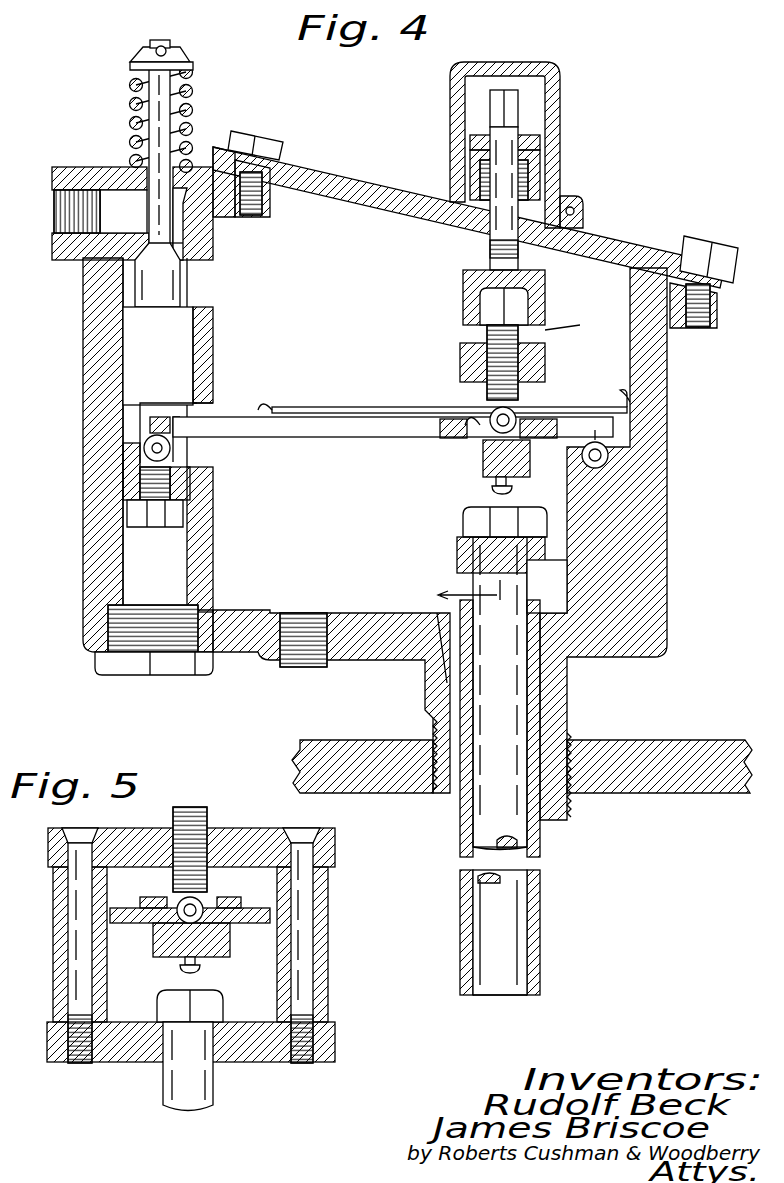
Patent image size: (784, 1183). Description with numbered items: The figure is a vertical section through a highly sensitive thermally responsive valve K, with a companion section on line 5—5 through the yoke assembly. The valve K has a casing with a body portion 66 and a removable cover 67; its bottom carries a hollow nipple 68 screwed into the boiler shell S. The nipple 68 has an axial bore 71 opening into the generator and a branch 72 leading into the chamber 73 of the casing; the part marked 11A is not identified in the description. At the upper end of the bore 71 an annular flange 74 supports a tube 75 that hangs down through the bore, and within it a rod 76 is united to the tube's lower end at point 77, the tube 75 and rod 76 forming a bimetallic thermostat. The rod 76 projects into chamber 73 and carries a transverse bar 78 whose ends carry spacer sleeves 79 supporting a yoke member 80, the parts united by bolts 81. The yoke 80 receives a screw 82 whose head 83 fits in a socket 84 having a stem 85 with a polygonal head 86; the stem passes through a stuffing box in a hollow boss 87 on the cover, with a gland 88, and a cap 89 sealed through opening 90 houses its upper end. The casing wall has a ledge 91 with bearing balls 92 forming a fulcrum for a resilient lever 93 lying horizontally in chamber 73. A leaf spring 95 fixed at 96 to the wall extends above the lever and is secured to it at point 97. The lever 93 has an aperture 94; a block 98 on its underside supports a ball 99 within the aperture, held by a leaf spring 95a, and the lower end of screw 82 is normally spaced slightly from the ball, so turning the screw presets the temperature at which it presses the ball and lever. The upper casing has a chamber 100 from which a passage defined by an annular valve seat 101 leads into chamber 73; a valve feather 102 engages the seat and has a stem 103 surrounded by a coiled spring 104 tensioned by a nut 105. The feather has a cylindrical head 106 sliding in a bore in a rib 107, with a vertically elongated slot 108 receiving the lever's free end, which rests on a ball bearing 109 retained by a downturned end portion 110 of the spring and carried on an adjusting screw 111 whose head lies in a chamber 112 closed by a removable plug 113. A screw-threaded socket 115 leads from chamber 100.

In FIG. 4, the section line 5 is at (500, 582).
In FIG. 4, the threaded connection 11A is at (355, 613).
In FIG. 4, the body portion 66 is at (668, 550).
In FIG. 4, the removable cover 67 is at (600, 243).
In FIG. 4, the hollow boss or nipple 68 is at (432, 702).
In FIG. 4, the axial bore 71 is at (548, 822).
In FIG. 4, the branch 72 is at (437, 665).
In FIG. 4, the chamber 73 is at (327, 647).
In FIG. 4, the annular flange 74 is at (544, 590).
In FIG. 4, the tube 75 is at (462, 838).
In FIG. 4, the rod 76 is at (530, 858).
In FIG. 4, the point of union 77 is at (530, 985).
In FIG. 4, the transverse bar 78 is at (460, 545).
In FIG. 5, the transverse bar 78 is at (52, 1040).
In FIG. 5, the spacer sleeves 79 is at (60, 918).
In FIG. 4, the yoke member 80 is at (470, 357).
In FIG. 5, the yoke member 80 is at (52, 843).
In FIG. 5, the bolts 81 is at (78, 890).
In FIG. 4, the bolt 82 is at (492, 330).
In FIG. 5, the bolt 82 is at (207, 815).
In FIG. 4, the head 83 is at (490, 305).
In FIG. 4, the socket 84 is at (465, 290).
In FIG. 4, the stem 85 is at (492, 243).
In FIG. 4, the polygonal head 86 is at (512, 105).
In FIG. 4, the hollow boss 87 is at (535, 180).
In FIG. 4, the gland 88 is at (540, 140).
In FIG. 4, the cap 89 is at (540, 120).
In FIG. 4, the opening 90 is at (578, 192).
In FIG. 4, the ledge 91 is at (610, 455).
In FIG. 4, the bearing balls 92 is at (595, 440).
In FIG. 4, the lever 93 is at (345, 436).
In FIG. 5, the lever 93 is at (135, 924).
In FIG. 4, the aperture 94 is at (470, 424).
In FIG. 4, the leaf spring 95 is at (546, 418).
In FIG. 5, the leaf spring 95 is at (152, 897).
In FIG. 4, the leaf spring 95a is at (494, 482).
In FIG. 5, the leaf spring 95a is at (202, 968).
In FIG. 4, the fixing point 96 is at (620, 392).
In FIG. 4, the securing point 97 is at (250, 412).
In FIG. 4, the block 98 is at (498, 450).
In FIG. 4, the ball 99 is at (497, 412).
In FIG. 5, the ball 99 is at (197, 900).
In FIG. 4, the chamber 100 is at (251, 480).
In FIG. 4, the annular valve seat 101 is at (182, 248).
In FIG. 4, the valve feather 102 is at (172, 275).
In FIG. 4, the stem 103 is at (157, 97).
In FIG. 4, the coiled spring 104 is at (131, 84).
In FIG. 4, the nut 105 is at (147, 50).
In FIG. 4, the cylindrical head 106 is at (190, 302).
In FIG. 4, the rib 107 is at (200, 330).
In FIG. 4, the vertically elongated slot 108 is at (155, 408).
In FIG. 4, the ball bearing 109 is at (145, 445).
In FIG. 4, the downturned end portion 110 is at (180, 450).
In FIG. 4, the adjusting screw 111 is at (145, 480).
In FIG. 4, the chamber 112 is at (128, 525).
In FIG. 4, the removable plug 113 is at (105, 662).
In FIG. 4, the screw-threaded socket 115 is at (62, 203).
In FIG. 4, the valve K is at (675, 494).
In FIG. 4, the boiler shell S is at (660, 738).